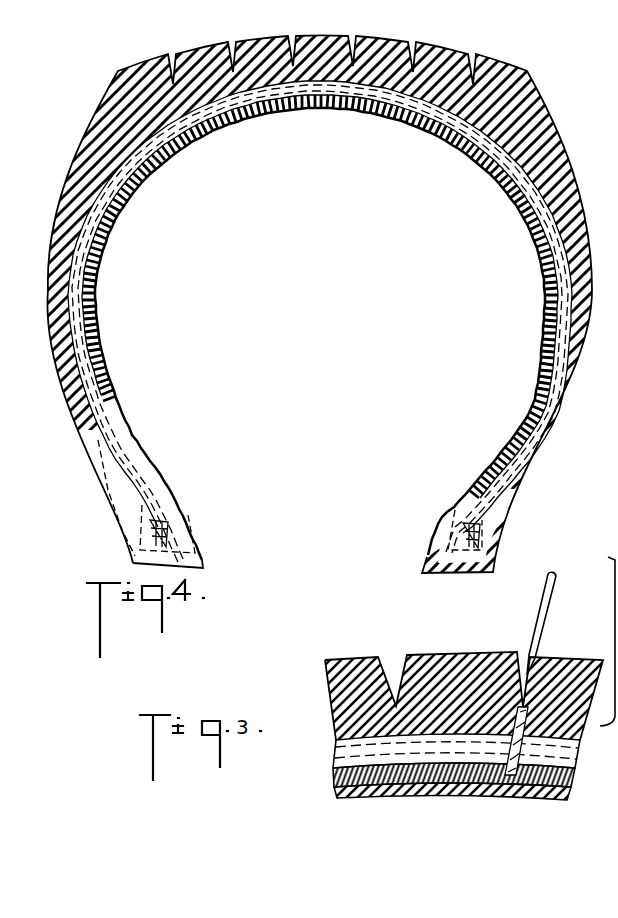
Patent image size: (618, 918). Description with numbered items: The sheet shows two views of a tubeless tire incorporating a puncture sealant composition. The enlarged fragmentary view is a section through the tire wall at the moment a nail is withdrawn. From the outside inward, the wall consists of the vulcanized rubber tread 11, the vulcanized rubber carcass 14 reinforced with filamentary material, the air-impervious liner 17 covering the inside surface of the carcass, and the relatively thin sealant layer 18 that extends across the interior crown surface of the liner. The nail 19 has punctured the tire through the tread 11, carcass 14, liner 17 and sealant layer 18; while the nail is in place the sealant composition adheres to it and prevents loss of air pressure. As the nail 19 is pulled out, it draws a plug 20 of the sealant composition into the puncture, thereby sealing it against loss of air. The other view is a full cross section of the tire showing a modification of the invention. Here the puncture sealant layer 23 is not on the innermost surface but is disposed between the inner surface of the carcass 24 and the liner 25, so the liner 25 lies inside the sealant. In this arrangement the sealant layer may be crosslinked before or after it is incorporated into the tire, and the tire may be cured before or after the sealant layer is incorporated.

In FIG. 4, the tread 11 is at (309, 459).
In FIG. 3, the tread 11 is at (325, 667).
In FIG. 3, the carcass 14 is at (337, 752).
In FIG. 3, the liner 17 is at (338, 777).
In FIG. 3, the sealant layer 18 is at (348, 795).
In FIG. 3, the nail 19 is at (543, 608).
In FIG. 3, the plug 20 is at (574, 750).
In FIG. 4, the puncture sealant layer 23 is at (205, 128).
In FIG. 4, the carcass 24 is at (130, 177).
In FIG. 4, the liner 25 is at (137, 201).